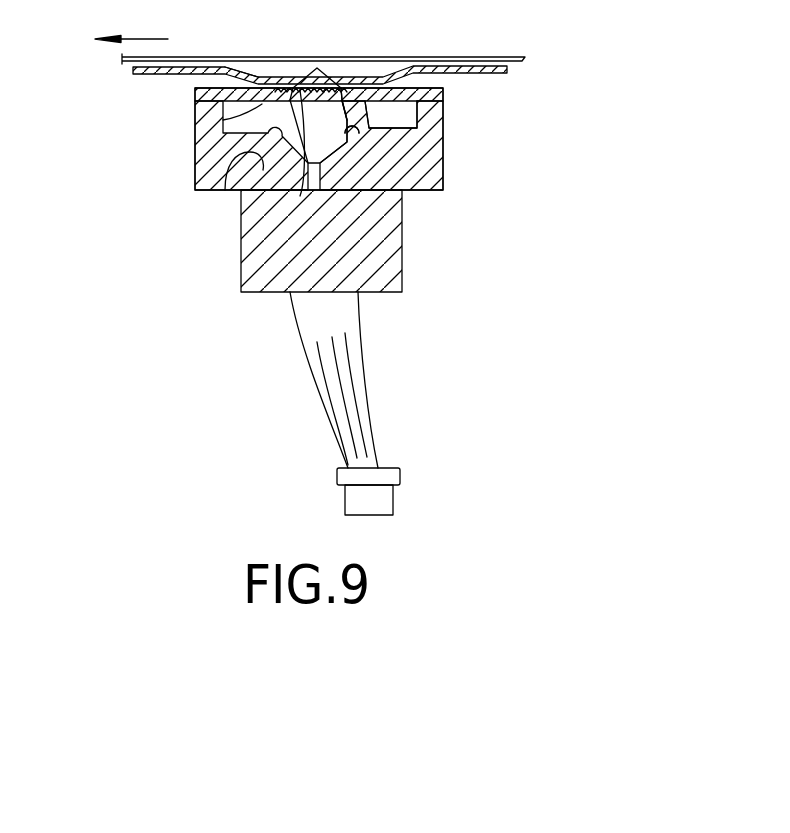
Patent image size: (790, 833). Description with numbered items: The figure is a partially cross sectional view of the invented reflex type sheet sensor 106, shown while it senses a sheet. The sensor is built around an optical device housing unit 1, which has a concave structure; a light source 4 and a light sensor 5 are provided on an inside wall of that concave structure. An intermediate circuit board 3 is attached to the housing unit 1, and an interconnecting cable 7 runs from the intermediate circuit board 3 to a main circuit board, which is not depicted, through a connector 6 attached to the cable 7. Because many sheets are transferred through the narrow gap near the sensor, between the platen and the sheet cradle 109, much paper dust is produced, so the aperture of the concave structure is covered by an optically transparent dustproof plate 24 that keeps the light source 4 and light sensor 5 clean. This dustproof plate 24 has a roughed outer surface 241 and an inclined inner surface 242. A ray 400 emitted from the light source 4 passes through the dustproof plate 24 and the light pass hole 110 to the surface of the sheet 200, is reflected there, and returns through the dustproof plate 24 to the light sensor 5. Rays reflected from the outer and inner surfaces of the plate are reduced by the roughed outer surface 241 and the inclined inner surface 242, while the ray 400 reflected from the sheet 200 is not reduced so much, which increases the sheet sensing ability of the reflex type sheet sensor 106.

The optical device housing unit 1 is at (270, 138).
The intermediate circuit board 3 is at (403, 270).
The light source 4 is at (226, 192).
The light sensor 5 is at (357, 140).
The connector 6 is at (331, 498).
The interconnecting cable 7 is at (368, 423).
The dustproof plate 24 is at (220, 85).
The reflex type sheet sensor 106 is at (529, 184).
The sheet cradle 109 is at (163, 75).
The light pass hole 110 is at (223, 118).
The sheet 200 is at (443, 56).
The roughed outer surface 241 is at (344, 88).
The inclined inner surface 242 is at (300, 196).
The ray 400 is at (299, 90).